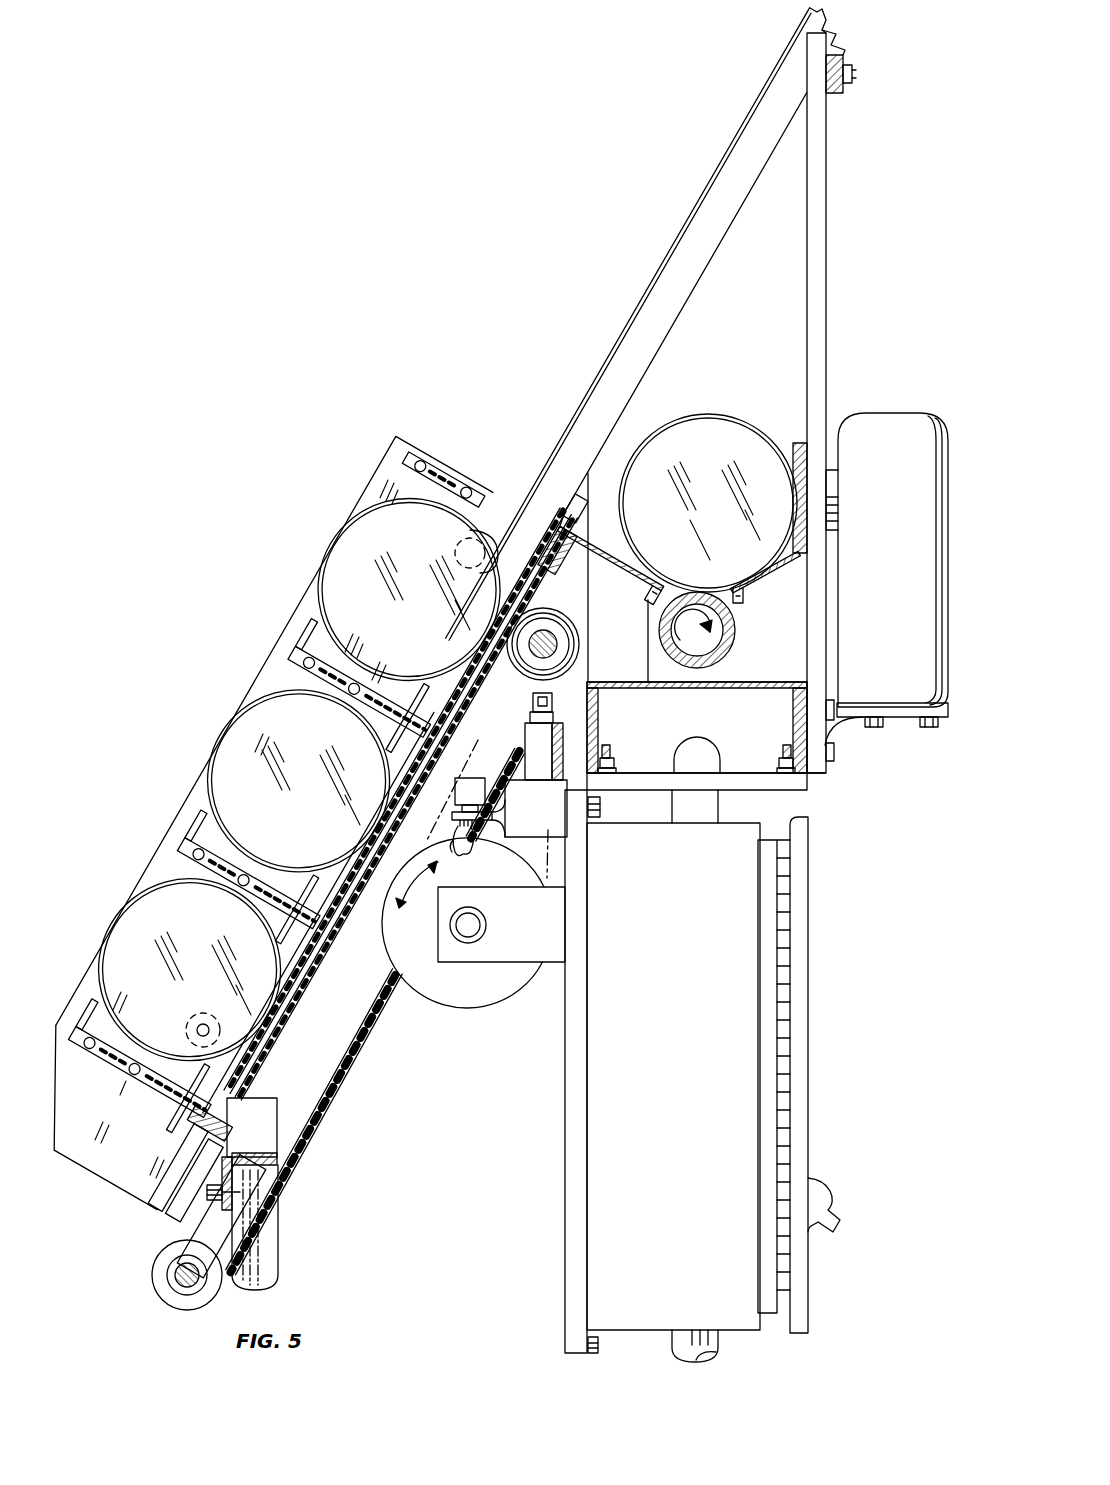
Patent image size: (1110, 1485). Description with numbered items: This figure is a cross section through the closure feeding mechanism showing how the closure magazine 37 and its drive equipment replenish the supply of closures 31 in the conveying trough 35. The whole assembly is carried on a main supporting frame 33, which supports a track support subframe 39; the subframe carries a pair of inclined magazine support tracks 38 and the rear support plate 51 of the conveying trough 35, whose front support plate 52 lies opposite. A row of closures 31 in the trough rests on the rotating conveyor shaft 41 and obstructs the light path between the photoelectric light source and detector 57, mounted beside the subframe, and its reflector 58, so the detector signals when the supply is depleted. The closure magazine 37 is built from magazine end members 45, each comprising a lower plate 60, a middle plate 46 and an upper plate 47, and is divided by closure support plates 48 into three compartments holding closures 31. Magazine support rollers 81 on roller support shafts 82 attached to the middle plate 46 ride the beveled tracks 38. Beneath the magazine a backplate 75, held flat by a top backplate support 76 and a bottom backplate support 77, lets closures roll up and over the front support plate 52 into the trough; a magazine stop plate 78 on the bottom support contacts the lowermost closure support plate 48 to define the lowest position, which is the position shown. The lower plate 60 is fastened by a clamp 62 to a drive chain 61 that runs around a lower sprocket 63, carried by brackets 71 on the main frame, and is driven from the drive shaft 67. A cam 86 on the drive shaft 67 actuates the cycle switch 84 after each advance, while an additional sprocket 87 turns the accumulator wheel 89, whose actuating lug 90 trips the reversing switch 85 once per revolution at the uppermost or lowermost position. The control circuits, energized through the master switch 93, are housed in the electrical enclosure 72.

The container closures 31 is at (422, 602).
The main supporting frame 33 is at (719, 744).
The conveying trough 35 is at (752, 391).
The closure magazine 37 is at (185, 732).
The magazine support tracks 38 is at (727, 230).
The track support subframe 39 is at (826, 205).
The rotating conveyor shaft 41 is at (734, 631).
The magazine end members 45 is at (76, 984).
The middle plate 46 is at (135, 1119).
The upper plate 47 is at (148, 870).
The closure support plates 48 is at (302, 640).
The rear support plate 51 is at (796, 566).
The front support plate 52 is at (650, 590).
The photoelectric light source and detector 57 is at (894, 592).
The reflector 58 is at (575, 500).
The lower plate 60 is at (186, 1149).
The drive chain 61 is at (342, 1099).
The clamp 62 is at (195, 1174).
The lower sprocket 63 is at (150, 1281).
The drive shaft 67 is at (556, 652).
The brackets 71 is at (204, 1223).
The electrical enclosure 72 is at (681, 1082).
The backplate 75 is at (300, 1002).
The top backplate support 76 is at (559, 560).
The bottom backplate support 77 is at (256, 1106).
The magazine stop plate 78 is at (200, 1120).
The magazine support rollers 81 is at (460, 551).
The roller support shafts 82 is at (462, 560).
The cycle switch 84 is at (551, 761).
The reversing switch 85 is at (472, 788).
The cam 86 is at (580, 646).
The additional sprocket 87 is at (563, 620).
The accumulator wheel 89 is at (474, 996).
The actuating lug 90 is at (476, 849).
The master switch 93 is at (828, 1206).